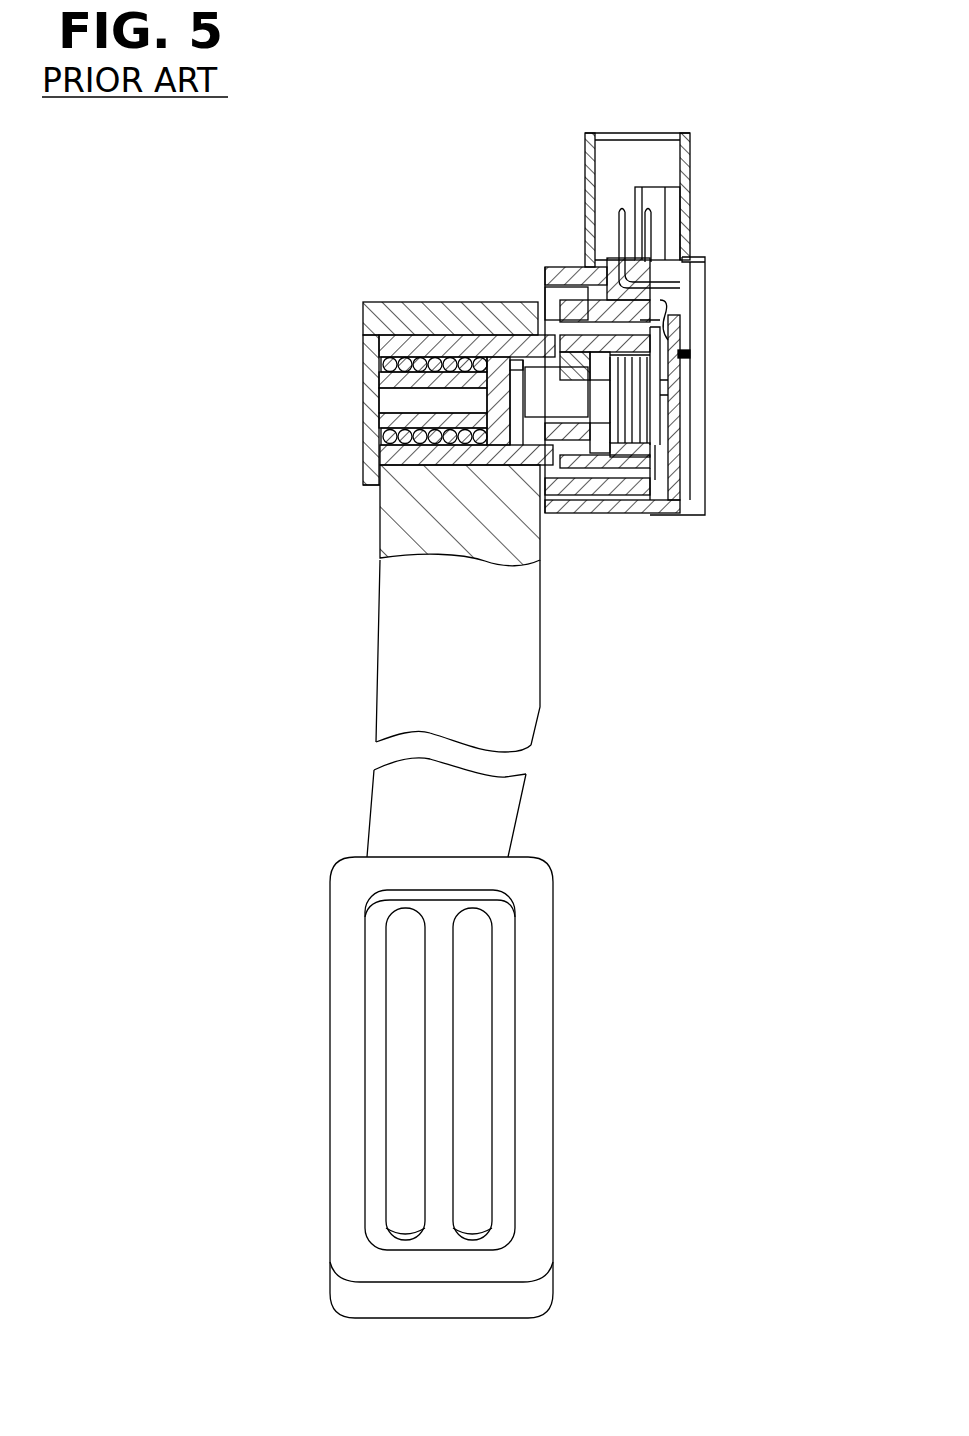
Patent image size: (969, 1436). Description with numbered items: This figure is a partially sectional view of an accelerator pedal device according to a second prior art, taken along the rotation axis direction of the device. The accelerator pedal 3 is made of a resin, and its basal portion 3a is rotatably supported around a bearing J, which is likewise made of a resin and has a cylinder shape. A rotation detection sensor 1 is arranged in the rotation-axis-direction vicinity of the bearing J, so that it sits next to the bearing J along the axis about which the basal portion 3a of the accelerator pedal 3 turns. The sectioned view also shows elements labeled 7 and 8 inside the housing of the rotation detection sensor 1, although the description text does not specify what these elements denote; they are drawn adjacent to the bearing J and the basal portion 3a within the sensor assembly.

The rotation detection sensor 1 is at (685, 315).
The accelerator pedal 3 is at (390, 627).
The basal portion 3a is at (403, 307).
The bearing J is at (447, 343).
The terminals 7 is at (608, 400).
The sensor element 8 is at (652, 405).